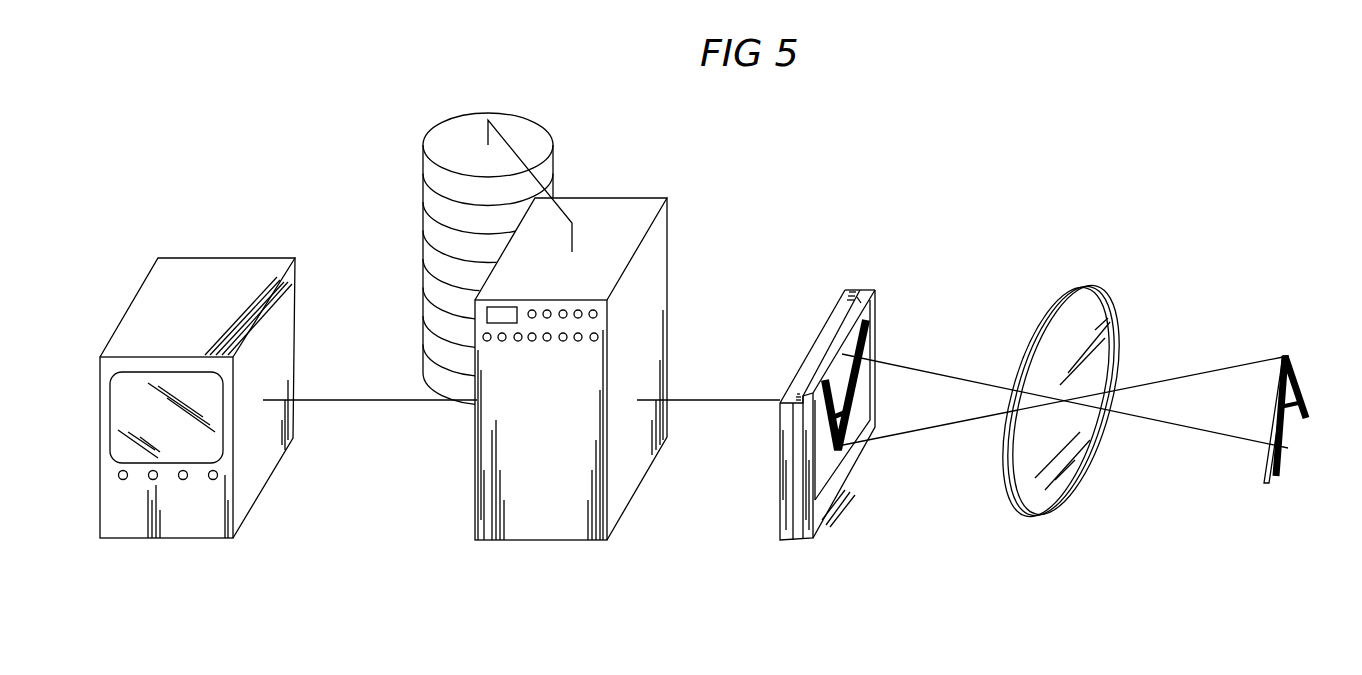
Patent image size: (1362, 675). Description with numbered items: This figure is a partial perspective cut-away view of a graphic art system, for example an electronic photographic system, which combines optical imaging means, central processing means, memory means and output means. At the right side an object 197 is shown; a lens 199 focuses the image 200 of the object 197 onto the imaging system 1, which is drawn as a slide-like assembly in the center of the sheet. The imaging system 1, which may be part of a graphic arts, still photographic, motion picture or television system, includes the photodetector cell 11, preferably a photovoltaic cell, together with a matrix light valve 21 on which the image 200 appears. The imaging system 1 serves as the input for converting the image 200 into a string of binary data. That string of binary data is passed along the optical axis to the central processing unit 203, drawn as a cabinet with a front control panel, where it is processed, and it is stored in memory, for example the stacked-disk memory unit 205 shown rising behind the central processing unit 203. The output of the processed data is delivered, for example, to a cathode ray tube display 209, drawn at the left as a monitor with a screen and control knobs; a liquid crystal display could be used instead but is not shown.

The cathode ray tube display 209 is at (218, 258).
The memory unit 205 is at (486, 112).
The central processing unit 203 is at (542, 543).
The imaging system 1 is at (858, 300).
The image 200 is at (863, 337).
The matrix light valve 21 is at (833, 510).
The photodetector cell 11 is at (783, 542).
The lens 199 is at (1033, 517).
The object 197 is at (1290, 362).